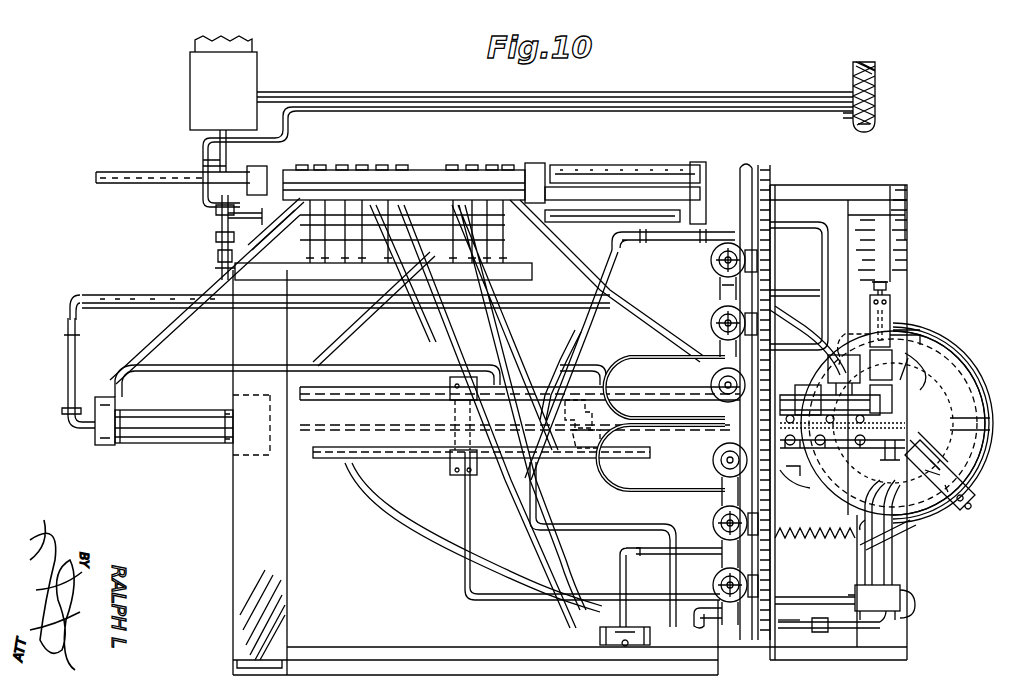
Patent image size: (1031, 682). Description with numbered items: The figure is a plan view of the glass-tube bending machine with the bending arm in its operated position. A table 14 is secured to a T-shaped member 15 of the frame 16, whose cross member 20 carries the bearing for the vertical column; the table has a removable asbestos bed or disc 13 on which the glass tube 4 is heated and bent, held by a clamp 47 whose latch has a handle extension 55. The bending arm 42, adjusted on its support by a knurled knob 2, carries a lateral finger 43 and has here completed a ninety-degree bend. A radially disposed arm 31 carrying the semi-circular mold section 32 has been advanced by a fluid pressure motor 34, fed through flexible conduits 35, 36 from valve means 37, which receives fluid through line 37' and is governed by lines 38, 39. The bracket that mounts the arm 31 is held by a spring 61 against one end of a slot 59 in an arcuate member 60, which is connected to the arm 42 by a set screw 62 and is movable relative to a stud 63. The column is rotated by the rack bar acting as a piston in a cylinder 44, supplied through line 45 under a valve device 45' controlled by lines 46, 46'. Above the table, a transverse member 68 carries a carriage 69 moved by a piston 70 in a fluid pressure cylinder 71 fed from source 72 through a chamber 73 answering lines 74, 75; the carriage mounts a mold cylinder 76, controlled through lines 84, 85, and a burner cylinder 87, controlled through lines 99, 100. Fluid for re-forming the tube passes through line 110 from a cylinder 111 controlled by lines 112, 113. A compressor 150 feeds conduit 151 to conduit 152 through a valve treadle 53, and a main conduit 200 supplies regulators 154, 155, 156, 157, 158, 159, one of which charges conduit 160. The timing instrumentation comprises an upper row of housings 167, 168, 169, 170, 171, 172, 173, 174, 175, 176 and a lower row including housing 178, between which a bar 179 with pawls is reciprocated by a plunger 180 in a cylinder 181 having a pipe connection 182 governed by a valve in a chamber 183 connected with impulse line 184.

The knurled knob 2 is at (882, 278).
The glass tube 4 is at (420, 458).
The bed or disc 13 is at (985, 402).
The table 14 is at (990, 424).
The T-shaped member 15 is at (900, 335).
The frame 16 is at (912, 232).
The cross member 20 is at (908, 242).
The radially disposed arm 31 is at (975, 502).
The mold or form section 32 is at (915, 439).
The fluid pressure motor 34 is at (940, 452).
The flexible conduit 35 is at (900, 542).
The flexible conduit 36 is at (862, 556).
The valve means 37 is at (841, 624).
The line 37' is at (786, 633).
The line 38 is at (910, 580).
The line 39 is at (465, 578).
The arm 42 is at (890, 305).
The lateral finger 43 is at (922, 346).
The cylinder 44 is at (590, 430).
The line 45 is at (560, 375).
The valve device 45' is at (578, 413).
The line 46 is at (416, 352).
The line 46' is at (587, 364).
The clamp 47 is at (922, 374).
The valve treadle 53 is at (853, 70).
The extension 55 is at (866, 378).
The slot 59 is at (970, 378).
The arcuate member 60 is at (985, 348).
The spring 61 is at (782, 540).
The set screw 62 is at (890, 318).
The stud 63 is at (948, 505).
The transverse member 68 is at (304, 396).
The carriage 69 is at (346, 392).
The piston 70 is at (266, 455).
The fluid pressure cylinder 71 is at (140, 434).
The source 72 is at (154, 300).
The chamber 73 is at (96, 400).
The line 74 is at (164, 340).
The line 75 is at (182, 364).
The cylinder 76 is at (856, 418).
The line 84 is at (806, 326).
The line 85 is at (790, 290).
The cylinder 87 is at (825, 462).
The line 99 is at (660, 335).
The line 100 is at (782, 226).
The line 110 is at (418, 530).
The cylinder 111 is at (645, 628).
The line 112 is at (672, 570).
The line 113 is at (570, 622).
The compressor 150 is at (238, 91).
The conduit 151 is at (406, 92).
The conduit 152 is at (428, 102).
The regulator 154 is at (712, 262).
The regulator 155 is at (712, 326).
The regulator 156 is at (719, 382).
The regulator 157 is at (713, 466).
The regulator 158 is at (712, 522).
The regulator 159 is at (713, 588).
The conduit 160 is at (616, 556).
The housing 167 is at (306, 157).
The housing 168 is at (320, 165).
The housing 169 is at (344, 157).
The housing 170 is at (361, 165).
The housing 171 is at (385, 157).
The housing 172 is at (401, 165).
The housing 173 is at (456, 157).
The housing 174 is at (471, 165).
The housing 175 is at (496, 157).
The housing 176 is at (507, 165).
The housing 178 is at (300, 170).
The bar 179 is at (606, 168).
The plunger 180 is at (600, 254).
The cylinder 181 is at (435, 240).
The fluid pressure pipe connection 182 is at (222, 234).
The chamber 183 is at (262, 248).
The line 184 is at (272, 172).
The conduit 200 is at (220, 138).